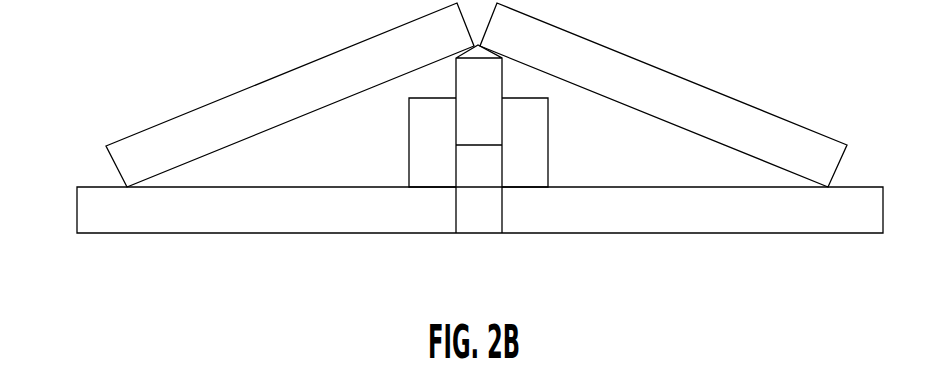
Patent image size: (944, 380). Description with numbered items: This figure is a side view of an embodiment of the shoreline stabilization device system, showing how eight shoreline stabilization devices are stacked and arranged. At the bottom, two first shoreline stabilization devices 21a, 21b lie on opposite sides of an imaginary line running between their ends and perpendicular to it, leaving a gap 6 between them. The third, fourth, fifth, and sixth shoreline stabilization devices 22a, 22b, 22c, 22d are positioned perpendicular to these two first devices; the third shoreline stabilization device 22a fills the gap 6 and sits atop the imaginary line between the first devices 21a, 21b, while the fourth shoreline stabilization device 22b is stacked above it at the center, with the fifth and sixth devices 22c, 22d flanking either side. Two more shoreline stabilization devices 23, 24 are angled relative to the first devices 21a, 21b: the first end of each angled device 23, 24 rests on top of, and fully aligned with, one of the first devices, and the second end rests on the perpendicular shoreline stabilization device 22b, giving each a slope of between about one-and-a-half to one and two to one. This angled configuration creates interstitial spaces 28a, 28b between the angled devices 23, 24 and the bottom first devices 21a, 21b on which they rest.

The angled shoreline stabilization device 23 is at (350, 62).
The angled shoreline stabilization device 24 is at (638, 72).
The interstitial space 28a is at (308, 140).
The interstitial space 28b is at (650, 143).
The third shoreline stabilization device 22a is at (461, 217).
The fourth shoreline stabilization device 22b is at (461, 105).
The fifth shoreline stabilization device 22c is at (420, 137).
The sixth shoreline stabilization device 22d is at (540, 138).
The first shoreline stabilization device 21a is at (333, 223).
The first shoreline stabilization device 21b is at (626, 223).
The gap 6 is at (457, 224).